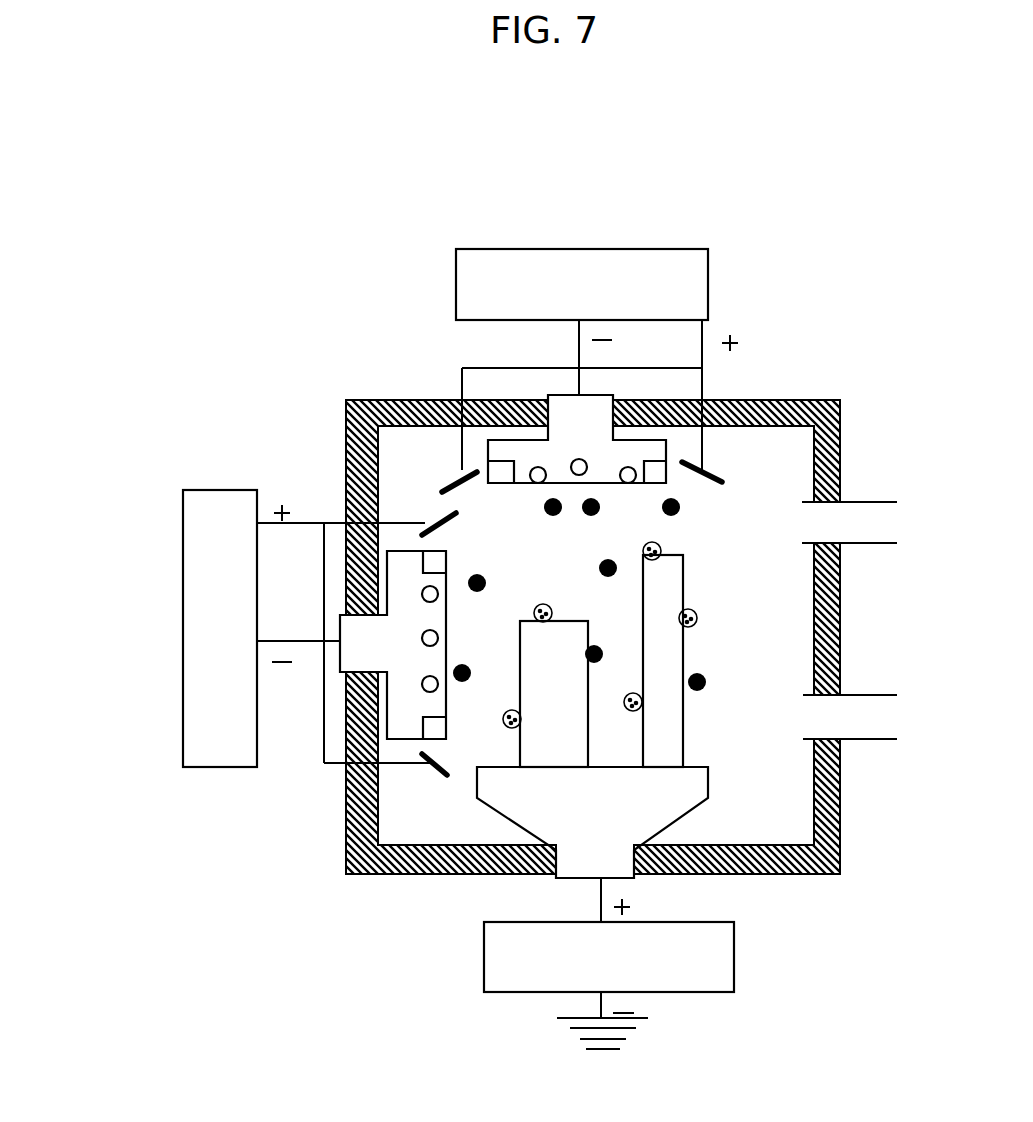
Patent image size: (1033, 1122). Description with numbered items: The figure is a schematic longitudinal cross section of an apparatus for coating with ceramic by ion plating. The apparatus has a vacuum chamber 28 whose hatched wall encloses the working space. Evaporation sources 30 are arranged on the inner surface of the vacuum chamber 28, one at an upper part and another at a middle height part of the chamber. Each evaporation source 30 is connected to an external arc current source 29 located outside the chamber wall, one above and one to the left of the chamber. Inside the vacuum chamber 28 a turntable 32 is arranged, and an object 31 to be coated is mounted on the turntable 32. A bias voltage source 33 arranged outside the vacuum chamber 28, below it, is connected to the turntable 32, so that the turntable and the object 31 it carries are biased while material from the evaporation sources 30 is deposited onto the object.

The vacuum chamber 28 is at (755, 401).
The arc current source 29 is at (540, 249).
The evaporation source 30 is at (677, 487).
The object to be coated 31 is at (562, 727).
The turntable 32 is at (677, 823).
The bias voltage source 33 is at (734, 978).